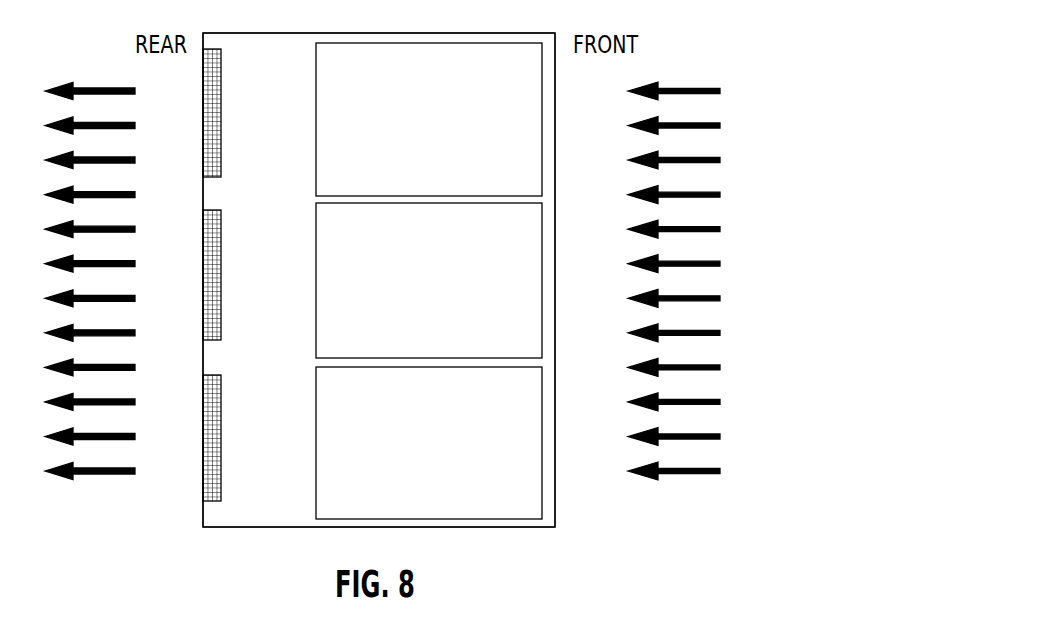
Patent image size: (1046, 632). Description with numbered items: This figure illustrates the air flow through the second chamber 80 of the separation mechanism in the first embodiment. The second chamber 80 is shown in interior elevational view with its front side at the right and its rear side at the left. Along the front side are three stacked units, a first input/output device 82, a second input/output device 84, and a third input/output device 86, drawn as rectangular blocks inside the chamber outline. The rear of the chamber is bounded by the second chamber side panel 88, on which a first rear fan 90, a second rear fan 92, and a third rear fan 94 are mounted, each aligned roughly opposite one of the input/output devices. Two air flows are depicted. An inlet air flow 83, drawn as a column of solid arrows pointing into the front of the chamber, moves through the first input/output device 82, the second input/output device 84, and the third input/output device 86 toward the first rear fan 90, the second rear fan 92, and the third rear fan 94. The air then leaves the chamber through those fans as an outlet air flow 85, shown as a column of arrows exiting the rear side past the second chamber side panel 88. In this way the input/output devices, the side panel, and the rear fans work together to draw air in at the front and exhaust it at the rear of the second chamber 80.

The second chamber 80 is at (675, 38).
The first input/output device 82 is at (543, 123).
The inlet air flow 83 is at (705, 88).
The second input/output device 84 is at (543, 268).
The outlet air flow 85 is at (100, 88).
The third input/output device 86 is at (543, 415).
The second chamber side panel 88 is at (203, 515).
The first rear fan 90 is at (203, 100).
The second rear fan 92 is at (203, 272).
The third rear fan 94 is at (203, 442).